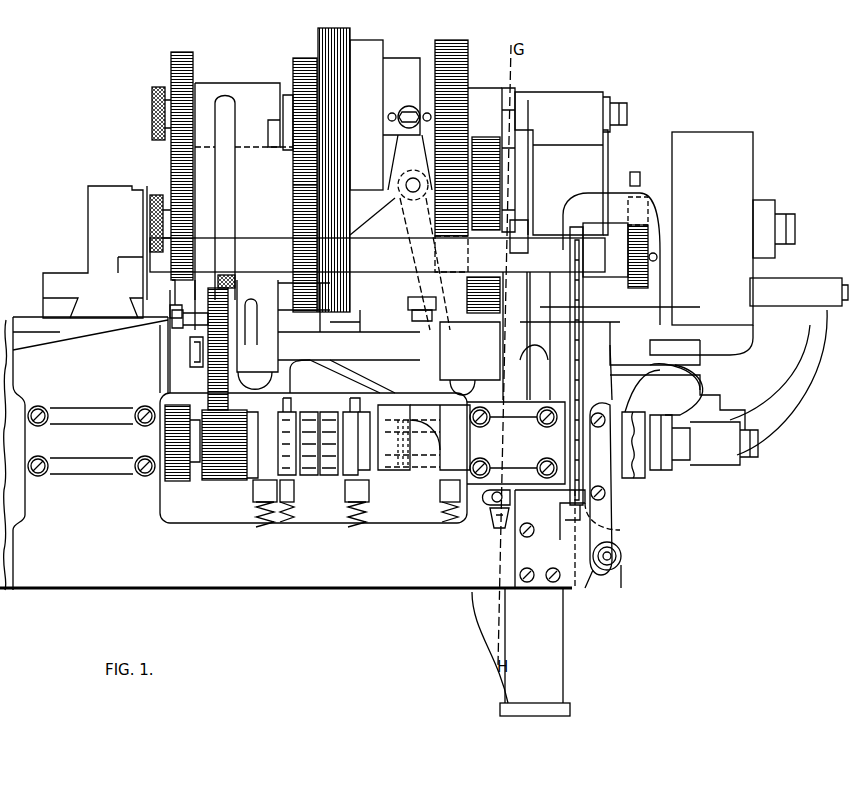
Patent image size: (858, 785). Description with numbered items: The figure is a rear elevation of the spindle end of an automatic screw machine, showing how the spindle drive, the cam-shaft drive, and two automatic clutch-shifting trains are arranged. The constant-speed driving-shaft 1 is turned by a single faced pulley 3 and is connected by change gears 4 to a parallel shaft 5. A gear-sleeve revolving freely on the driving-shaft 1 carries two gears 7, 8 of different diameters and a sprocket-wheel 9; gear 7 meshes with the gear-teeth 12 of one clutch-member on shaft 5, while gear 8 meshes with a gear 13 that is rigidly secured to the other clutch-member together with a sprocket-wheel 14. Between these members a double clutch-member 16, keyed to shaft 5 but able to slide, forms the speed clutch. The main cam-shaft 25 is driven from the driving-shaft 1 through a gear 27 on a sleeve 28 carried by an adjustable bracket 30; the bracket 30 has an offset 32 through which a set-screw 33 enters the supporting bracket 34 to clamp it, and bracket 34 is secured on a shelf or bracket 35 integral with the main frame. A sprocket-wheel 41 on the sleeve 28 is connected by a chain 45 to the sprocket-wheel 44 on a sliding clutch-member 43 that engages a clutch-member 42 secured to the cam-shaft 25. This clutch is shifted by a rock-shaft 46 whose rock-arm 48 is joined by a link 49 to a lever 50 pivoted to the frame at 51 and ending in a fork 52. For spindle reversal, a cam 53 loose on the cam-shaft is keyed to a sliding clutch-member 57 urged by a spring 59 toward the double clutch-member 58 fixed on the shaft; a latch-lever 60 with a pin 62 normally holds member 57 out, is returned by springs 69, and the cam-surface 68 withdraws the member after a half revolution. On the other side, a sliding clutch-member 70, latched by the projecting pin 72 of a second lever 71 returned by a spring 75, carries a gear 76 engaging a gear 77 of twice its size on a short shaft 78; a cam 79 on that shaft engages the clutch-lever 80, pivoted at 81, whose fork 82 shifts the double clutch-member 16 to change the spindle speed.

The driving-shaft 1 is at (795, 228).
The single faced pulley 3 is at (705, 133).
The change gears 4 is at (178, 50).
The parallel shaft 5 is at (628, 113).
The gear 7 is at (445, 215).
The gear 8 is at (293, 190).
The sprocket-wheel 9 is at (498, 152).
The gear-teeth 12 is at (455, 42).
The gear 13 is at (290, 72).
The sprocket-wheel 14 is at (320, 45).
The double clutch-member 16 is at (395, 58).
The main cam-shaft 25 is at (682, 450).
The gear 27 is at (650, 280).
The sleeve 28 is at (592, 262).
The adjustable bracket 30 is at (568, 220).
The offset 32 is at (618, 170).
The set-screw 33 is at (640, 180).
The supporting bracket 34 is at (588, 165).
The shelf or bracket 35 is at (245, 262).
The sprocket-wheel 41 is at (582, 232).
The clutch-member 42 is at (642, 475).
The sliding clutch-member 43 is at (625, 488).
The sprocket-wheel 44 is at (573, 505).
The chain 45 is at (572, 340).
The rock-shaft 46 is at (492, 520).
The rock-arm 48 is at (490, 494).
The link 49 is at (604, 520).
The lever 50 is at (620, 553).
The pivot 51 is at (612, 572).
The fork 52 is at (632, 495).
The cam 53 is at (442, 468).
The sliding clutch-member 57 is at (330, 478).
The double clutch-member 58 is at (308, 468).
The spring 59 is at (410, 465).
The latch-lever 60 is at (365, 498).
The pin 62 is at (336, 478).
The cam-surface 68 is at (355, 412).
The springs 69 is at (360, 522).
The sliding clutch-member 70 is at (258, 466).
The second lever 71 is at (258, 497).
The projecting pin 72 is at (285, 503).
The spring 75 is at (262, 522).
The gear 76 is at (212, 472).
The gear 77 is at (210, 373).
The short shaft 78 is at (312, 360).
The cam 79 is at (445, 380).
The clutch-lever 80 is at (438, 292).
The pivot 81 is at (408, 190).
The fork 82 is at (412, 140).